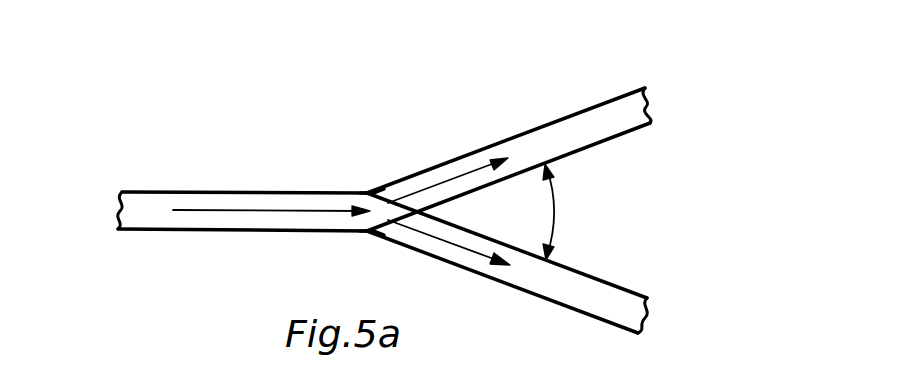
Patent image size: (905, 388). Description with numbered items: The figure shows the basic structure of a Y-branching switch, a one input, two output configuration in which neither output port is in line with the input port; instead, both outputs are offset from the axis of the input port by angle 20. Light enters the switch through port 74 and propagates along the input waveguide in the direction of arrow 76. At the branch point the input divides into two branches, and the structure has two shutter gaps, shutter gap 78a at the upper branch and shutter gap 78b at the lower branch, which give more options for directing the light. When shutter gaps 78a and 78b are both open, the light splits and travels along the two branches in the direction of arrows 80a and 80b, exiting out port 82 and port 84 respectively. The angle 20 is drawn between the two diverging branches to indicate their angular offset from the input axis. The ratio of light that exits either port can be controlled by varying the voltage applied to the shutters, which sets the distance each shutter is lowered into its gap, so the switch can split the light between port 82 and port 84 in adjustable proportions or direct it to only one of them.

The input port 74 is at (108, 208).
The arrow 76 is at (263, 212).
The shutter gap 78a is at (384, 206).
The shutter gap 78b is at (383, 226).
The arrow 80a is at (508, 153).
The arrow 80b is at (458, 250).
The output port 82 is at (657, 93).
The output port 84 is at (658, 310).
The angle 20 is at (560, 213).